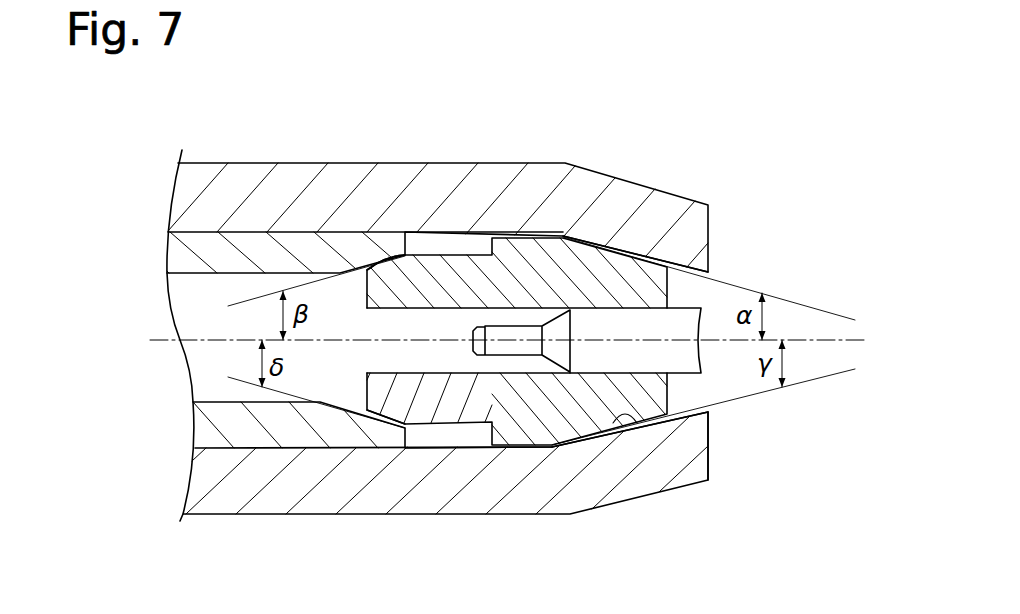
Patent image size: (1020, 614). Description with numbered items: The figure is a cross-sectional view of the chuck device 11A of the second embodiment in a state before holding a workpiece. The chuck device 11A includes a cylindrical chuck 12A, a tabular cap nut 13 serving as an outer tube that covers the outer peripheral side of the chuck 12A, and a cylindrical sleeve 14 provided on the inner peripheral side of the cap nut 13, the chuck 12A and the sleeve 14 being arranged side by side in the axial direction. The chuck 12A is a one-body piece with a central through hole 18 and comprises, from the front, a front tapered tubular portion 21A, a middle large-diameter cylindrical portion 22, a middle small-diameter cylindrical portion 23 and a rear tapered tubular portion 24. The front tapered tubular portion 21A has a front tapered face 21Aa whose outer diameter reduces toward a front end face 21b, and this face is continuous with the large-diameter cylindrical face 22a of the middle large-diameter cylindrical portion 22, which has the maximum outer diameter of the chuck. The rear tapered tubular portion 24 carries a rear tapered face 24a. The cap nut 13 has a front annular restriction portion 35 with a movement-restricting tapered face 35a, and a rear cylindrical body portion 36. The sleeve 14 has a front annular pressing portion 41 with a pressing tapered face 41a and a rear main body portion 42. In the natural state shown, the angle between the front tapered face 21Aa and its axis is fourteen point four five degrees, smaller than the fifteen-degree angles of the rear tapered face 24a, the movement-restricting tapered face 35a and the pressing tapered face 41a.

The chuck device 11A is at (720, 163).
The chuck 12A is at (563, 228).
The cap nut 13 is at (616, 170).
The sleeve 14 is at (247, 222).
The through hole 18 is at (453, 320).
The front tapered tubular portion 21A is at (587, 428).
The front tapered face 21Aa is at (648, 214).
The front end face 21b is at (710, 405).
The middle large-diameter cylindrical portion 22 is at (512, 240).
The large-diameter cylindrical face 22a is at (514, 442).
The middle small-diameter cylindrical portion 23 is at (435, 256).
The rear tapered tubular portion 24 is at (390, 407).
The rear tapered face 24a is at (381, 250).
The restriction portion 35 is at (693, 233).
The movement-restricting tapered face 35a is at (637, 423).
The body portion 36 is at (267, 200).
The pressing portion 41 is at (389, 245).
The pressing tapered face 41a is at (358, 408).
The main body portion 42 is at (212, 250).